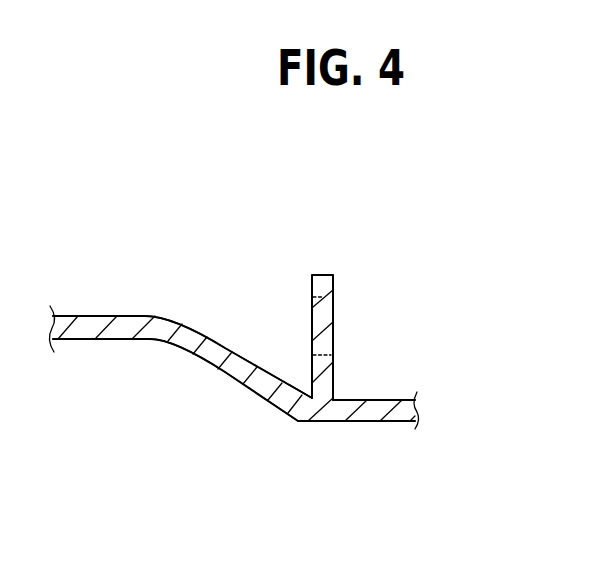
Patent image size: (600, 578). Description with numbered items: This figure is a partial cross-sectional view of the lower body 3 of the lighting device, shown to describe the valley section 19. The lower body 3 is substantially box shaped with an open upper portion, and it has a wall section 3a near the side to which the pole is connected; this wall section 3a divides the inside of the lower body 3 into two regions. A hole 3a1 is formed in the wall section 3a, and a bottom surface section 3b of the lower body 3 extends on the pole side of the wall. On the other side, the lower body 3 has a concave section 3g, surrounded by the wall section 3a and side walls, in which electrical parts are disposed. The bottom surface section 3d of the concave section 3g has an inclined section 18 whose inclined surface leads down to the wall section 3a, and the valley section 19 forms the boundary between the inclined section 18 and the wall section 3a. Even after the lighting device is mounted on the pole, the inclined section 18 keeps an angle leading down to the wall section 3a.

The lower body 3 is at (322, 422).
The wall section 3a is at (320, 275).
The hole 3a1 is at (338, 320).
The bottom surface section 3b is at (383, 400).
The bottom surface section 3d is at (98, 316).
The concave section 3g is at (148, 293).
The inclined section 18 is at (213, 318).
The valley section 19 is at (300, 379).